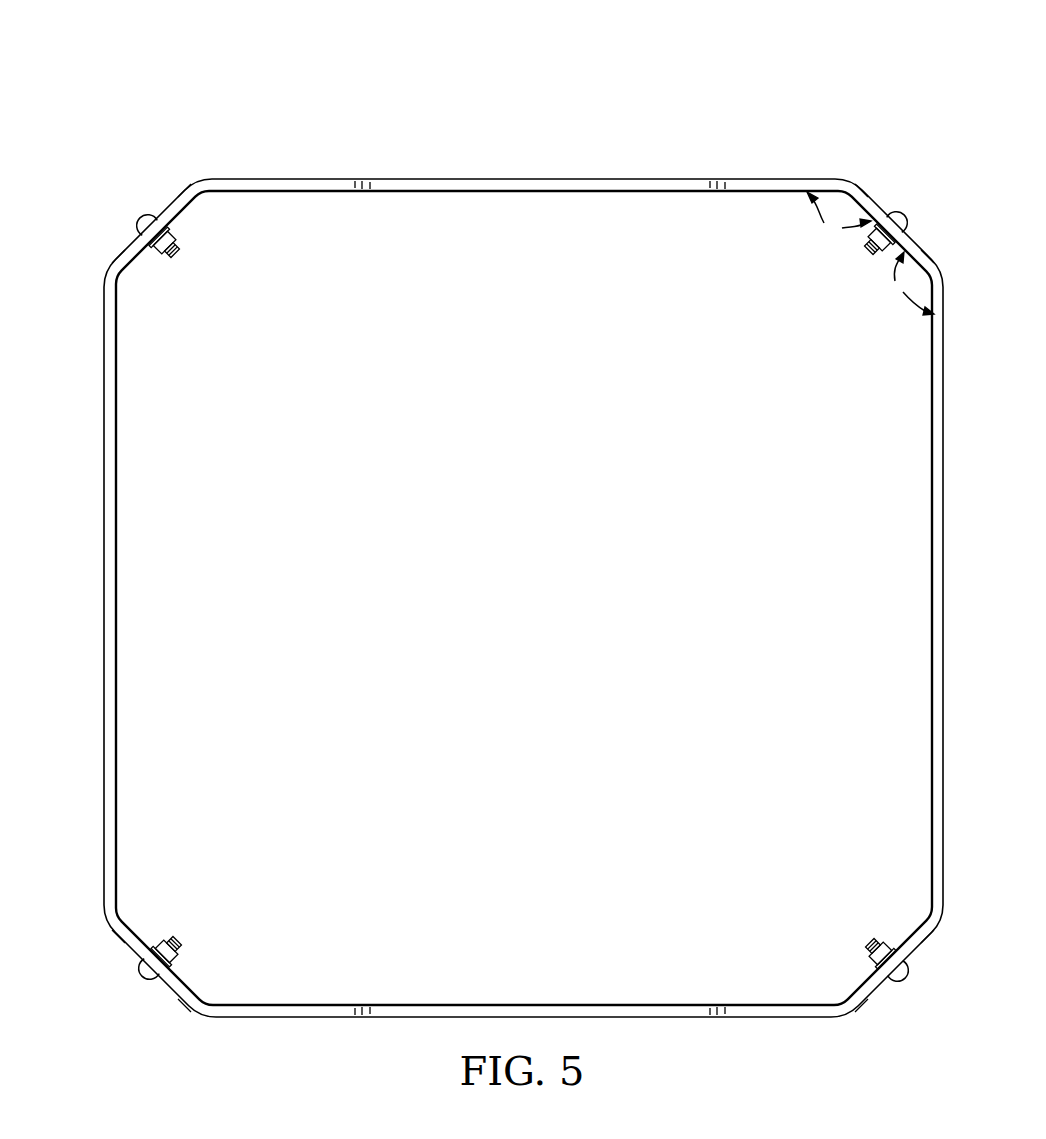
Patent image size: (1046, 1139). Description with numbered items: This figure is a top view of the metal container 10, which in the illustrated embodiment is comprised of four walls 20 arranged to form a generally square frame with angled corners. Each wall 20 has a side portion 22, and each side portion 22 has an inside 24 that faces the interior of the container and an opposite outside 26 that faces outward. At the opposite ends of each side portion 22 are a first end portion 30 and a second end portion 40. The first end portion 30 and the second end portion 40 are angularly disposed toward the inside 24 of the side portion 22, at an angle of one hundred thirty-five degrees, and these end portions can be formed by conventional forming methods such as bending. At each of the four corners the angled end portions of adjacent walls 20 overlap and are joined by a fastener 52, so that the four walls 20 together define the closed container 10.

The metal container 10 is at (298, 76).
The wall 20 is at (653, 179).
The side portion 22 is at (527, 184).
The inside 24 is at (118, 520).
The outside 26 is at (103, 484).
The first end portion 30 is at (124, 257).
The second end portion 40 is at (181, 200).
The fastener 52 is at (178, 257).